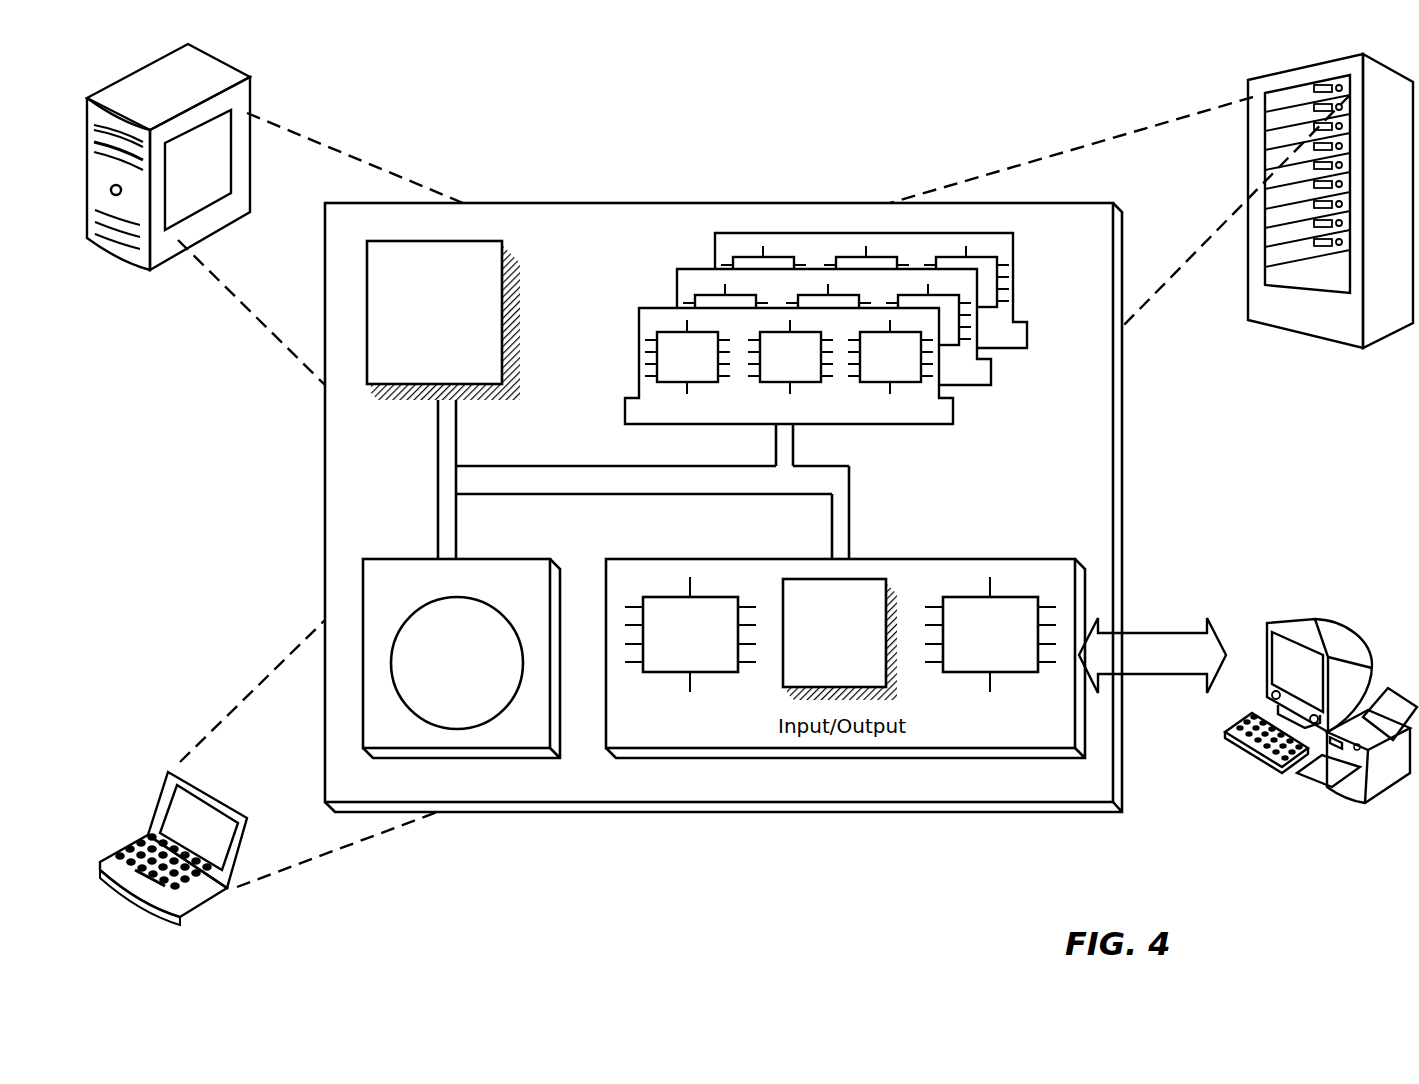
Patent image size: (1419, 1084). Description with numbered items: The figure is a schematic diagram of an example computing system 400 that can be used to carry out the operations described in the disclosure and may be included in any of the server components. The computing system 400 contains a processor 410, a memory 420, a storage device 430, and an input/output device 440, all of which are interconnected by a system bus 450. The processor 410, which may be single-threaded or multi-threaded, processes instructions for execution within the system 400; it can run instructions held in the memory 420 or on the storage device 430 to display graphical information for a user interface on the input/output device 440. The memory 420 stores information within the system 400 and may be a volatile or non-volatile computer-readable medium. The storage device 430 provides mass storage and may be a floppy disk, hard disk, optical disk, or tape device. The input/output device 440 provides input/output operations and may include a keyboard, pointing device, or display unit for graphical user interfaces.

The computing system 400 is at (533, 112).
The processor 410 is at (497, 377).
The memory 420 is at (1024, 389).
The storage device 430 is at (542, 741).
The input/output device 440 is at (1262, 625).
The system bus 450 is at (638, 483).